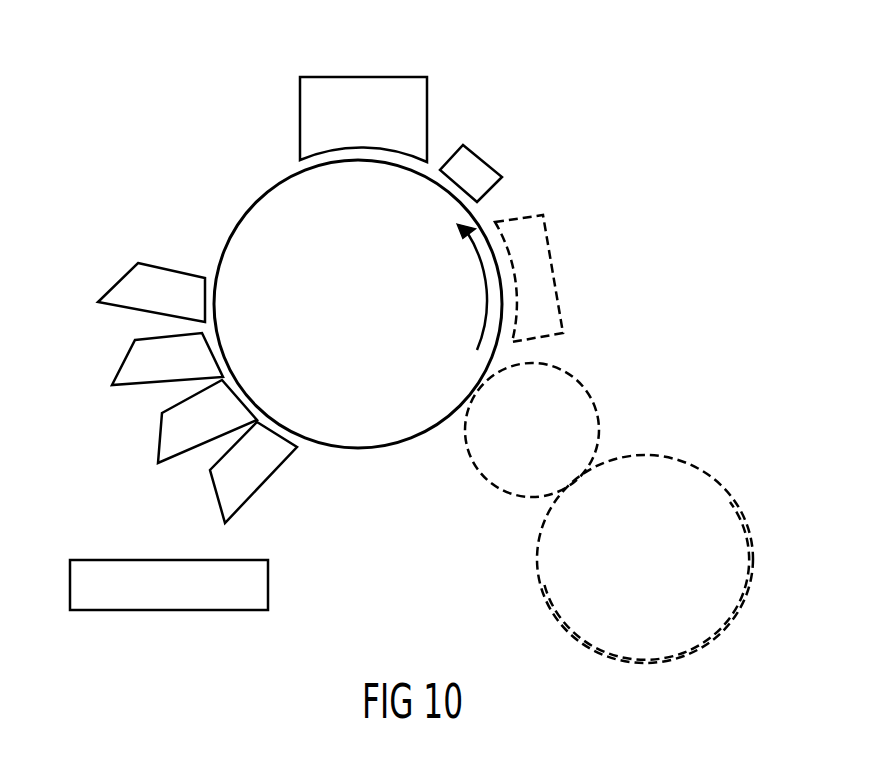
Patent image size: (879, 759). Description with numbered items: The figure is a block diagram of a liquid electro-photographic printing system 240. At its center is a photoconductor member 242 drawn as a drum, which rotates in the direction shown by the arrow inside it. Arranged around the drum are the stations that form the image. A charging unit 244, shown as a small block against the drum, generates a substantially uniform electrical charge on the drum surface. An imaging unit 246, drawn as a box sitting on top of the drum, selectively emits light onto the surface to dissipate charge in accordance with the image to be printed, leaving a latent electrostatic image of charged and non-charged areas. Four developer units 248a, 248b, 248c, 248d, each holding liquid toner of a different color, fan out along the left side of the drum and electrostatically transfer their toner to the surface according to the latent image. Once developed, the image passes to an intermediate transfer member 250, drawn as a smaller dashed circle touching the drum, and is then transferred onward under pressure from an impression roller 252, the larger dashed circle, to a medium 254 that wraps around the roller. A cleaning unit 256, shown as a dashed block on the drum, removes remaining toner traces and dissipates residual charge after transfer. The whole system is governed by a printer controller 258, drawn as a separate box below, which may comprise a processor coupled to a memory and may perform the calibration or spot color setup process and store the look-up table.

The printing system 240 is at (175, 114).
The photoconductor member 242 is at (238, 213).
The charging unit 244 is at (489, 162).
The imaging unit 246 is at (365, 77).
The developer unit 248a is at (130, 271).
The developer unit 248b is at (128, 354).
The developer unit 248c is at (162, 432).
The developer unit 248d is at (273, 477).
The intermediate transfer member 250 is at (588, 392).
The impression roller 252 is at (738, 490).
The medium 254 is at (672, 456).
The cleaning unit 256 is at (558, 275).
The printer controller 258 is at (268, 590).